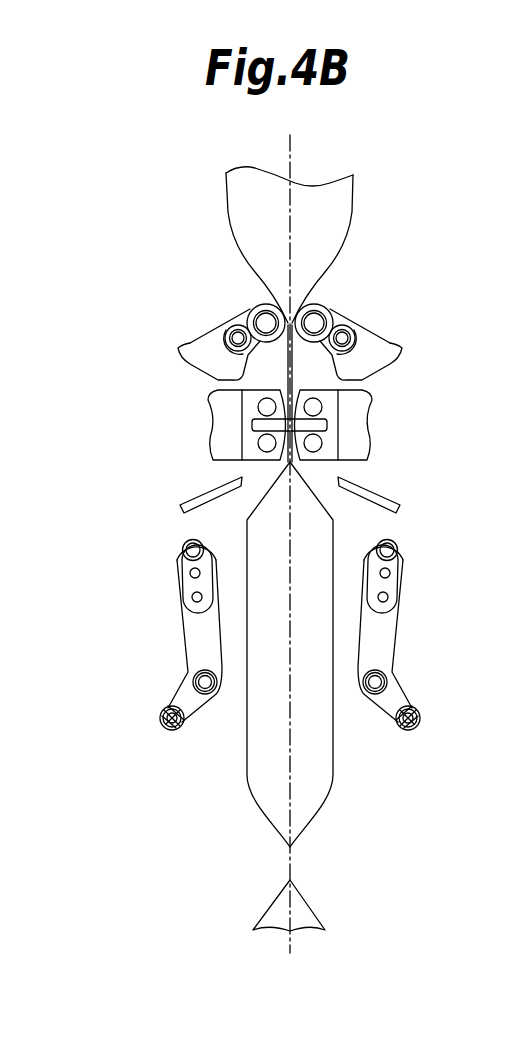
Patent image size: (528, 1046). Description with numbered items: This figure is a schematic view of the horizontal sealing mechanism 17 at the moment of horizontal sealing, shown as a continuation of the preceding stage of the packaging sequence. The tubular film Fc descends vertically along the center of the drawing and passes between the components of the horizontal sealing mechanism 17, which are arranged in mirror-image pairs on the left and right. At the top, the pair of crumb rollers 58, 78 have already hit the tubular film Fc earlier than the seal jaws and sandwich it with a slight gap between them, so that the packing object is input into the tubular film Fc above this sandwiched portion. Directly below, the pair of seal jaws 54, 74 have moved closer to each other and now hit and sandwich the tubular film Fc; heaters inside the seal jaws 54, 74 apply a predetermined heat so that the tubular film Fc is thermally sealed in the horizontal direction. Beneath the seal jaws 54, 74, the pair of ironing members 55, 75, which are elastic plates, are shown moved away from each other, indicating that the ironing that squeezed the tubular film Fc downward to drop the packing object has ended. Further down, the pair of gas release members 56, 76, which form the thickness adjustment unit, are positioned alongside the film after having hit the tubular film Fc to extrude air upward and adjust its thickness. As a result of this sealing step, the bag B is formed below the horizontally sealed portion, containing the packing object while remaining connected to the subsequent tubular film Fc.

The horizontal sealing mechanism 17 is at (170, 274).
The crumb roller 58 is at (183, 349).
The crumb roller 78 is at (392, 350).
The seal jaw 54 is at (207, 402).
The seal jaw 74 is at (373, 405).
The ironing member 55 is at (178, 503).
The ironing member 75 is at (402, 505).
The gas release member 56 is at (178, 548).
The gas release member 76 is at (400, 548).
The tubular film Fc is at (313, 205).
The bag B is at (317, 755).